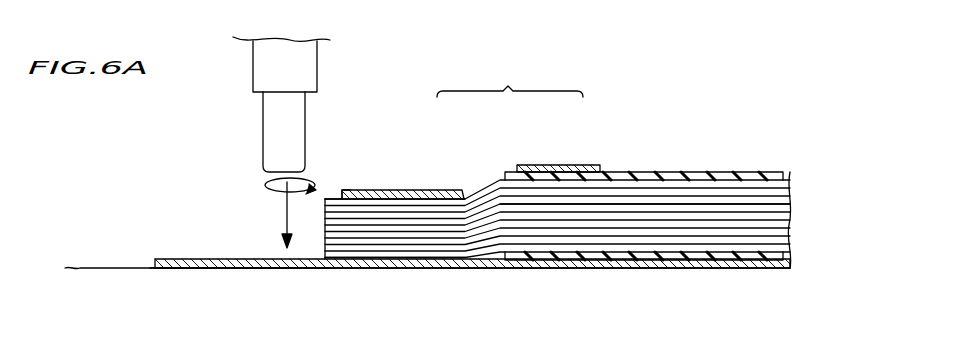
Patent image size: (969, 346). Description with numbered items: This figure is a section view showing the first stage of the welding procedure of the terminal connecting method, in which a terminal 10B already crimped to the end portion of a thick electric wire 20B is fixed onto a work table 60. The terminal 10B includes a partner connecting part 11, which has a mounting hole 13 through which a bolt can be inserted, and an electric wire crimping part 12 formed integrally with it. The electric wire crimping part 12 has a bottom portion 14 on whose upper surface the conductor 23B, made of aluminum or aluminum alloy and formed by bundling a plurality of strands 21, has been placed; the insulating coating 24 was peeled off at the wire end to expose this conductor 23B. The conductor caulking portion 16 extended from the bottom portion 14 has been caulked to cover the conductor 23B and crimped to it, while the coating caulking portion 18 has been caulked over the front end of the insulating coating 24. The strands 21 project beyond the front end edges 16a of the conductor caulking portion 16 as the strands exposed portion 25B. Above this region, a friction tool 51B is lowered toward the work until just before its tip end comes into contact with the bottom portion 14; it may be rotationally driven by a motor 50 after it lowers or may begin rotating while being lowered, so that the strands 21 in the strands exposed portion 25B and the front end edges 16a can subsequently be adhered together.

The work table 60 is at (100, 266).
The mounting hole 13 is at (210, 270).
The partner connecting part 11 is at (175, 258).
The terminal 10B is at (410, 272).
The bottom portion 14 is at (485, 182).
The conductor 23B is at (727, 198).
The strands 21 is at (331, 198).
The conductor caulking portion 16 is at (431, 188).
The front end edges 16a is at (345, 191).
The coating caulking portion 18 is at (573, 164).
The electric wire crimping part 12 is at (510, 80).
The electric wire 20B is at (676, 168).
The insulating coating 24 is at (682, 270).
The motor 50 is at (300, 58).
The friction tool 51B is at (300, 108).
The strands exposed portion 25B is at (320, 230).